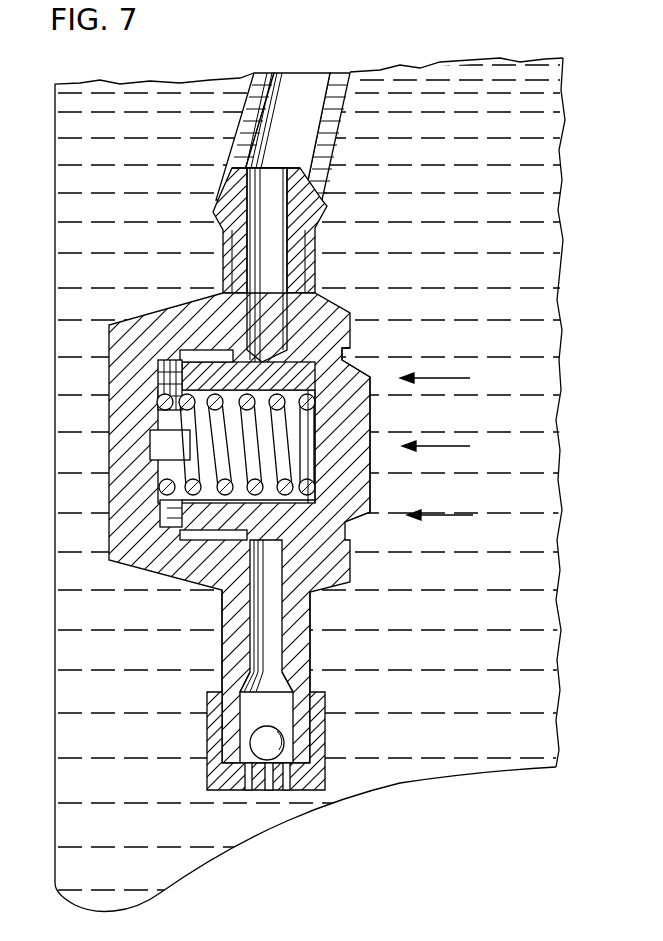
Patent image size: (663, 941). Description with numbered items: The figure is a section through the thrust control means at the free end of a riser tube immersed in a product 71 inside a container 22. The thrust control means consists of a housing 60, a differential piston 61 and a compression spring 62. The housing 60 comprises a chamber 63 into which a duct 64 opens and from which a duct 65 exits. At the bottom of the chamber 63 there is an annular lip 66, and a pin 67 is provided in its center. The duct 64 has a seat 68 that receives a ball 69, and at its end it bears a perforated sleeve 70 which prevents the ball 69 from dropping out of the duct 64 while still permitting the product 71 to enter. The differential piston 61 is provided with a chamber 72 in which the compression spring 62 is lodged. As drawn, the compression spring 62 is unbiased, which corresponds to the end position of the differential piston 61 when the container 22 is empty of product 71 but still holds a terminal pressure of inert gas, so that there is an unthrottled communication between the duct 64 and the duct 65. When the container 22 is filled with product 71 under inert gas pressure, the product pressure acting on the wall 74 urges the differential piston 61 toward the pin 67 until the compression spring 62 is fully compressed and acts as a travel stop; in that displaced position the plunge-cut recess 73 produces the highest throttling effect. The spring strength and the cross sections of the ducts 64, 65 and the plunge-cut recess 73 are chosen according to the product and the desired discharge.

The container 22 is at (55, 628).
The housing 60 is at (325, 313).
The differential piston 61 is at (358, 385).
The compression spring 62 is at (300, 396).
The chamber 63 is at (203, 535).
The duct 64 is at (273, 622).
The duct 65 is at (275, 258).
The annular lip 66 is at (180, 356).
The pin 67 is at (172, 440).
The seat 68 is at (277, 685).
The ball 69 is at (270, 737).
The perforated sleeve 70 is at (243, 782).
The product 71 is at (535, 532).
The chamber 72 is at (305, 470).
The plunge-cut recess 73 is at (283, 343).
The wall 74 is at (370, 430).